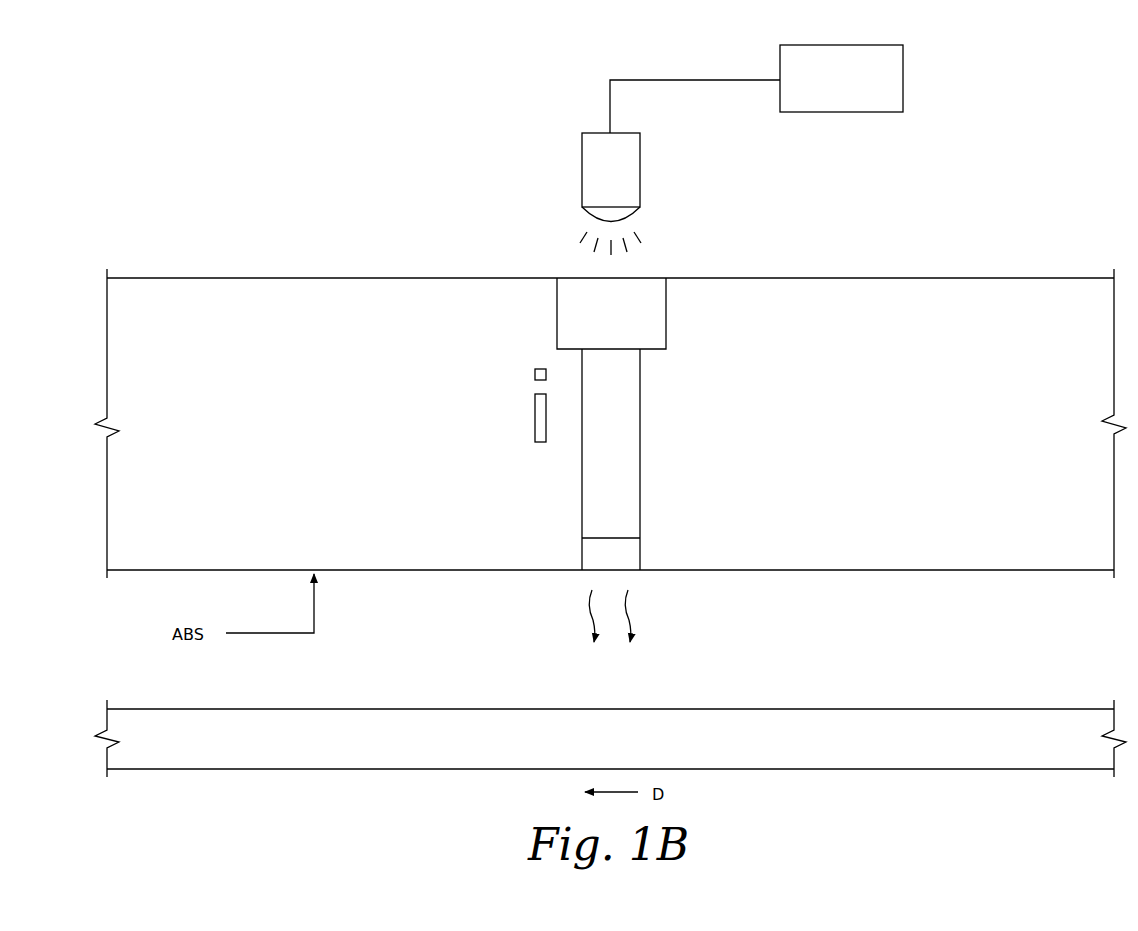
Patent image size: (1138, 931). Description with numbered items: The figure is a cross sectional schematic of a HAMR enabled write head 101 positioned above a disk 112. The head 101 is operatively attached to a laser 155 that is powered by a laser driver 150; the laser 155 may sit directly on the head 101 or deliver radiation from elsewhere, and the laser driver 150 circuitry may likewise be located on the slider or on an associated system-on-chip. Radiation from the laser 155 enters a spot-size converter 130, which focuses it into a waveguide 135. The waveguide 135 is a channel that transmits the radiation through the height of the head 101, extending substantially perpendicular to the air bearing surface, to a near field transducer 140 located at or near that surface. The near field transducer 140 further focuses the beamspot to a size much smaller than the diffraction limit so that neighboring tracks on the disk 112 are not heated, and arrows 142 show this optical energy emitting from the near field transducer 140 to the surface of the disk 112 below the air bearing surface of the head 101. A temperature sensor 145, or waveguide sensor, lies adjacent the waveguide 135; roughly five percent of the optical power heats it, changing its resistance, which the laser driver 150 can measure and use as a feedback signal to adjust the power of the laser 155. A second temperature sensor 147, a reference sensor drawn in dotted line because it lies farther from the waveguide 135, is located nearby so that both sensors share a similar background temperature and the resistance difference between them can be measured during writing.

The HAMR enabled write head 101 is at (209, 226).
The disk 112 is at (912, 770).
The spot-size converter 130 is at (557, 315).
The waveguide 135 is at (582, 493).
The near field transducer 140 is at (582, 549).
The arrows 142 is at (570, 609).
The temperature sensor 145 is at (534, 373).
The second temperature sensor 147 is at (534, 419).
The laser driver 150 is at (905, 64).
The laser 155 is at (590, 151).